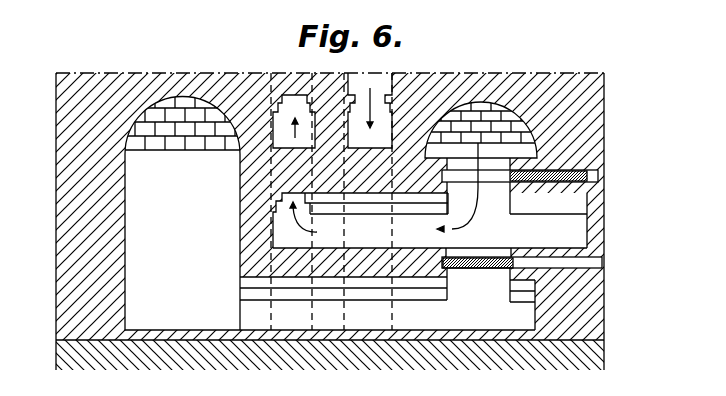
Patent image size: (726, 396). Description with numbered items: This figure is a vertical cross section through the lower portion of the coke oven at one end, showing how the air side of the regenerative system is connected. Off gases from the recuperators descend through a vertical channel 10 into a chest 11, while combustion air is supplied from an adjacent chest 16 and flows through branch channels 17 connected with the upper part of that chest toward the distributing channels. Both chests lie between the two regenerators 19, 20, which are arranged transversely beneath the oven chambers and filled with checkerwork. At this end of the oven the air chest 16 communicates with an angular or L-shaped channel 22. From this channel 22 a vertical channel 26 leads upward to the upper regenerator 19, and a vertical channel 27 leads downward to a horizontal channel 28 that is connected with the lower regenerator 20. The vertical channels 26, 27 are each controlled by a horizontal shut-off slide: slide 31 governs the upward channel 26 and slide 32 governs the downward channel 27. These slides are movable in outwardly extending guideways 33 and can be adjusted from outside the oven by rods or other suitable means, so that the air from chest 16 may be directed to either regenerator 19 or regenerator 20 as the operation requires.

The vertical channel 10 is at (382, 74).
The chest 11 is at (392, 221).
The chest 16 is at (295, 220).
The branch channels 17 is at (271, 89).
The regenerator 19 is at (497, 112).
The regenerator 20 is at (193, 143).
The angular channel 22 is at (376, 217).
The vertical channel 26 is at (497, 163).
The vertical channel 27 is at (478, 248).
The horizontal channel 28 is at (387, 303).
The shut-off slide 31 is at (588, 181).
The shut-off slide 32 is at (494, 270).
The guideways 33 is at (600, 176).